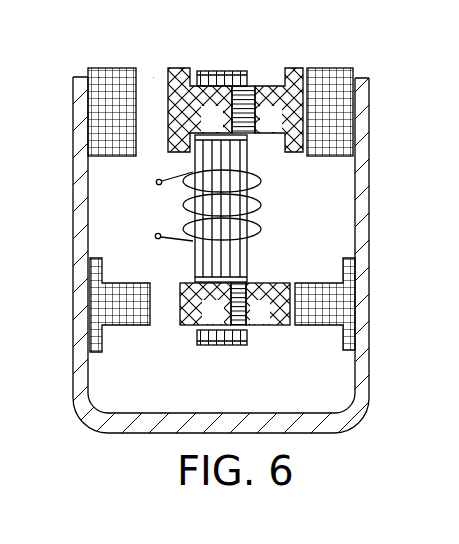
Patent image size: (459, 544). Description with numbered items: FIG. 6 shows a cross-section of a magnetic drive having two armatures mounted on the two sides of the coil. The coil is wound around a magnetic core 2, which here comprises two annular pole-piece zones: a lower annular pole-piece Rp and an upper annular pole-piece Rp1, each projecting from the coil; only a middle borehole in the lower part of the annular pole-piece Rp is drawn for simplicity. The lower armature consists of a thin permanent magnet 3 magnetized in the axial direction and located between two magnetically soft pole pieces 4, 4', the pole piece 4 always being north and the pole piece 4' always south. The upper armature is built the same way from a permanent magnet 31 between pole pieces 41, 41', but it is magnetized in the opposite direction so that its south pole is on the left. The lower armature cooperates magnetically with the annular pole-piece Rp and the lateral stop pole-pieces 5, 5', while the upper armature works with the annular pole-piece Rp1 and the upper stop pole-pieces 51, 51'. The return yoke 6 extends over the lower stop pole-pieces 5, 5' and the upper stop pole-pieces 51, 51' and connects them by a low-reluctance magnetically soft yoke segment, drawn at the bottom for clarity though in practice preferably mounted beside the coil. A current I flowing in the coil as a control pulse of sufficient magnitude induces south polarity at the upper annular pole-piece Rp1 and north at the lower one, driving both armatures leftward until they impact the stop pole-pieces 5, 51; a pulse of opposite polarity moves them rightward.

The return yoke 6 is at (80, 337).
The upper stop pole-piece 51 is at (88, 95).
The upper stop pole-piece 51' is at (354, 95).
The stop pole-piece 5 is at (120, 316).
The stop pole-piece 5' is at (325, 316).
The pole piece of upper armature 41 is at (180, 84).
The pole piece of upper armature 41' is at (284, 84).
The permanent magnet of upper armature 31 is at (248, 87).
The upper annular pole-piece Rp1 is at (213, 75).
The pole piece 4 is at (194, 330).
The pole piece 4' is at (268, 287).
The permanent magnet 3 is at (248, 326).
The annular pole-piece Rp is at (223, 346).
The magnetic core 2 is at (225, 155).
The coil current I is at (158, 222).